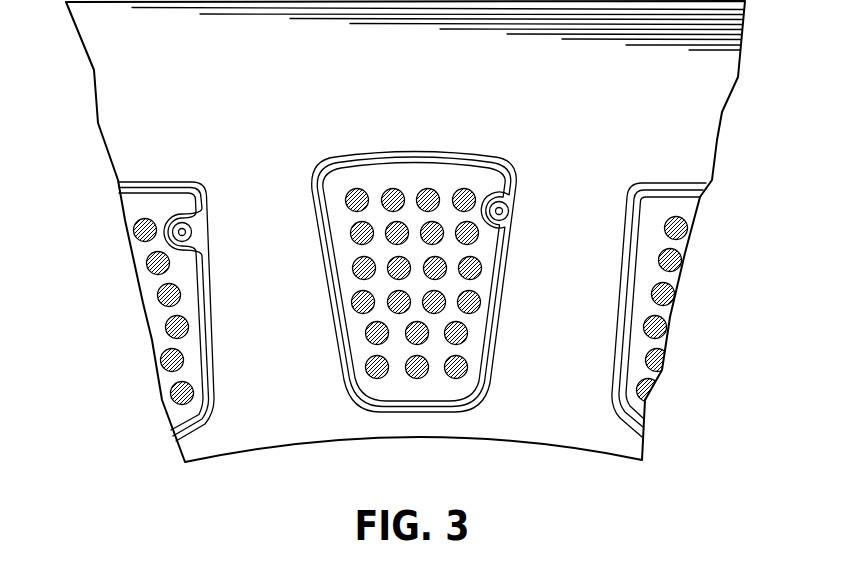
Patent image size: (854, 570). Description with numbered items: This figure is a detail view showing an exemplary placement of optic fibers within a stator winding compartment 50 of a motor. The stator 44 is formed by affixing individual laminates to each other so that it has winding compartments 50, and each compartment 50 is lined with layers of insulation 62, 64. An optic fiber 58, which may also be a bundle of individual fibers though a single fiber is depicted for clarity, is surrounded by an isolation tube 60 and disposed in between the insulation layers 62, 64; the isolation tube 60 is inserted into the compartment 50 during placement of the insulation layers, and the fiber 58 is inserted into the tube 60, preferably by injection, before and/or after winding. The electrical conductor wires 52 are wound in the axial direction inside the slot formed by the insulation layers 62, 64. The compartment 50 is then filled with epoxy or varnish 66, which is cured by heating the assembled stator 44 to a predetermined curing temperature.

The stator 44 is at (95, 68).
The stator winding compartment 50 is at (495, 348).
The electrical conductor wires 52 is at (350, 192).
The optic fiber 58 is at (189, 225).
The isolation tube 60 is at (186, 233).
The insulation layer 62 is at (397, 158).
The outer insulation layer 64 is at (453, 152).
The epoxy or varnish 66 is at (343, 222).